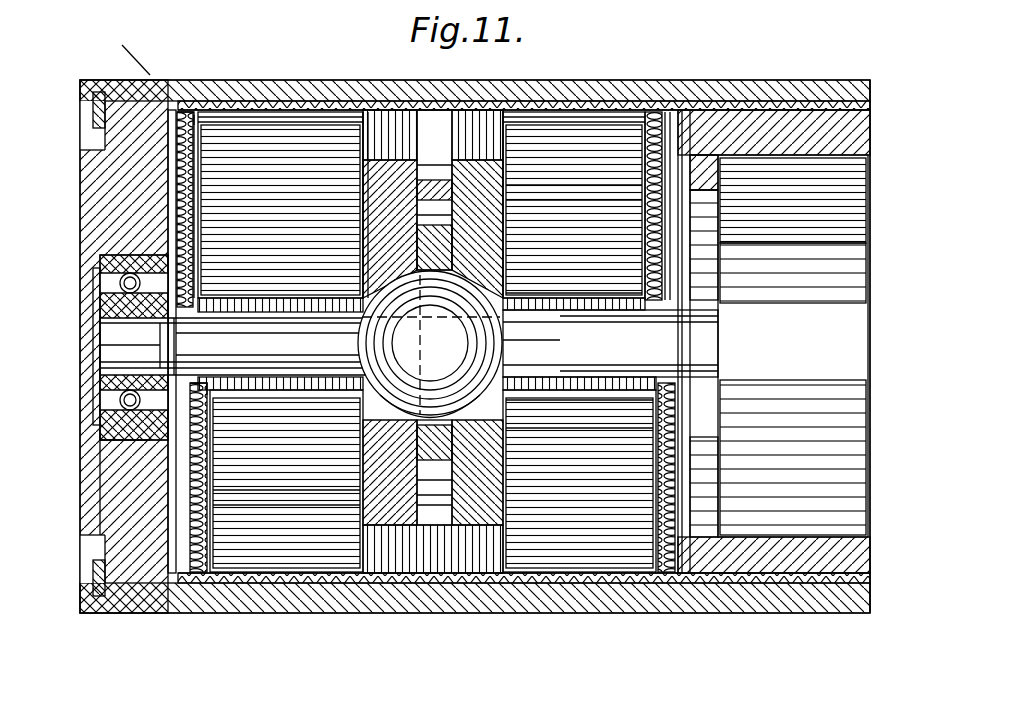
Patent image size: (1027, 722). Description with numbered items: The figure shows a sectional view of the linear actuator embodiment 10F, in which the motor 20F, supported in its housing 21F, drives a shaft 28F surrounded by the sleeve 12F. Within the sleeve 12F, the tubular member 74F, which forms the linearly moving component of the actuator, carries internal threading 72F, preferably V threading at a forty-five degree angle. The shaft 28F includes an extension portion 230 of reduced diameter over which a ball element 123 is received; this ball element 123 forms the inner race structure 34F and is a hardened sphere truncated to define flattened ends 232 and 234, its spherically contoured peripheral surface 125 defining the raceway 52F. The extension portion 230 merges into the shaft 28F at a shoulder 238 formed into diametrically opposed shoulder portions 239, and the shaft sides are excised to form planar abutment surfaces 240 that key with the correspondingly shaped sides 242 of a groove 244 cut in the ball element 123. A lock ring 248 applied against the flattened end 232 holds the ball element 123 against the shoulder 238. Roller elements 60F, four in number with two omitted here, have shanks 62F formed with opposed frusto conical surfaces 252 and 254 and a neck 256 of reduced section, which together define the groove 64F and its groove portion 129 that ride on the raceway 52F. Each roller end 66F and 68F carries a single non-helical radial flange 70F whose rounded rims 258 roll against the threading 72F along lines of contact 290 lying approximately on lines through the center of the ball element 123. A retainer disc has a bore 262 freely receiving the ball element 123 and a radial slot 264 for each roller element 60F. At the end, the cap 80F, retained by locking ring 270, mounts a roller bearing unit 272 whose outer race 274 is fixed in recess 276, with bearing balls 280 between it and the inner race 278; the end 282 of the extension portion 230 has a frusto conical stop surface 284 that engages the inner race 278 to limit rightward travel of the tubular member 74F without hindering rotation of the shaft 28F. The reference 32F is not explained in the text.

The linear actuator embodiment 10F is at (797, 625).
The sleeve 12F is at (790, 98).
The motor 20F is at (832, 222).
The motor housing 21F is at (850, 271).
The shaft 28F is at (698, 342).
The housing bottom wall 32F is at (290, 590).
The inner race structure 34F is at (520, 298).
The raceway 52F is at (470, 270).
The roller element 60F is at (300, 140).
The roller element shank 62F is at (345, 122).
The roller element groove 64F is at (560, 125).
The roller element end 66F is at (205, 218).
The roller element end 68F is at (722, 183).
The radial flange 70F is at (218, 115).
The internal threading 72F is at (590, 542).
The tubular member 74F is at (600, 106).
The end cap 80F is at (100, 185).
The ball element 123 is at (500, 329).
The spherically contoured peripheral surface 125 is at (378, 430).
The groove portion 129 is at (385, 203).
The shaft extension portion 230 is at (262, 385).
The flattened end 232 is at (312, 380).
The flattened end 234 is at (532, 390).
The shoulder 238 is at (639, 325).
The shoulder portion 239 is at (430, 399).
The planar abutment surface 240 is at (545, 293).
The groove side 242 is at (605, 425).
The groove 244 is at (570, 350).
The lock ring 248 is at (365, 331).
The frusto conical surface 252 is at (385, 175).
The frusto conical surface 254 is at (485, 199).
The neck 256 is at (445, 160).
The rounded rim 258 is at (186, 194).
The retainer bore 262 is at (430, 343).
The radial slot 264 is at (485, 184).
The locking ring 270 is at (98, 104).
The roller bearing unit 272 is at (104, 434).
The outer race 274 is at (110, 452).
The recess 276 is at (98, 545).
The inner race 278 is at (112, 386).
The bearing balls 280 is at (130, 290).
The shaft extension end 282 is at (210, 412).
The frusto conical stop surface 284 is at (158, 328).
The lines of contact 290 is at (186, 112).